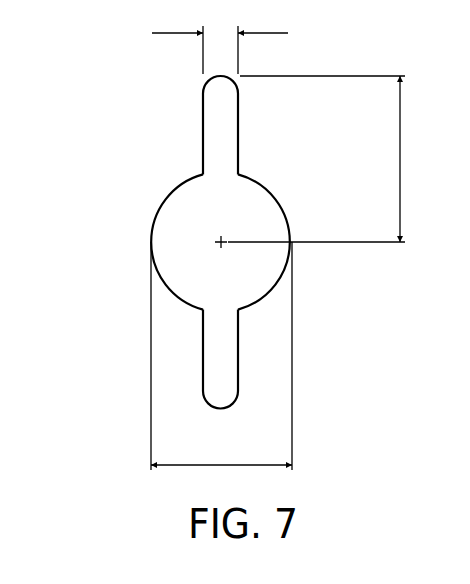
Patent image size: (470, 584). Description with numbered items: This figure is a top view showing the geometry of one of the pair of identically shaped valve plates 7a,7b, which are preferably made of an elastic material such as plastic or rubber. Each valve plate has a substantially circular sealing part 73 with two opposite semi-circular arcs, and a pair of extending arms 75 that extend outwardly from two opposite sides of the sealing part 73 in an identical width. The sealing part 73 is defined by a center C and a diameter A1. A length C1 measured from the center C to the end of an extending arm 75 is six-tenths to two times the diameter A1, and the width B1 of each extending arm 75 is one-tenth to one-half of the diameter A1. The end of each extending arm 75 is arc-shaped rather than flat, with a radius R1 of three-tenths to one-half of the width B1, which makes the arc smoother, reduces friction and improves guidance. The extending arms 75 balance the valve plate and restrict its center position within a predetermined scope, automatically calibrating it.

The valve plates 7a,7b is at (170, 107).
The sealing part 73 is at (179, 209).
The extending arms 75 is at (215, 150).
The center C is at (226, 240).
The radius R1 is at (220, 93).
The diameter A1 is at (221, 356).
The width B1 is at (220, 37).
The length C1 is at (316, 159).